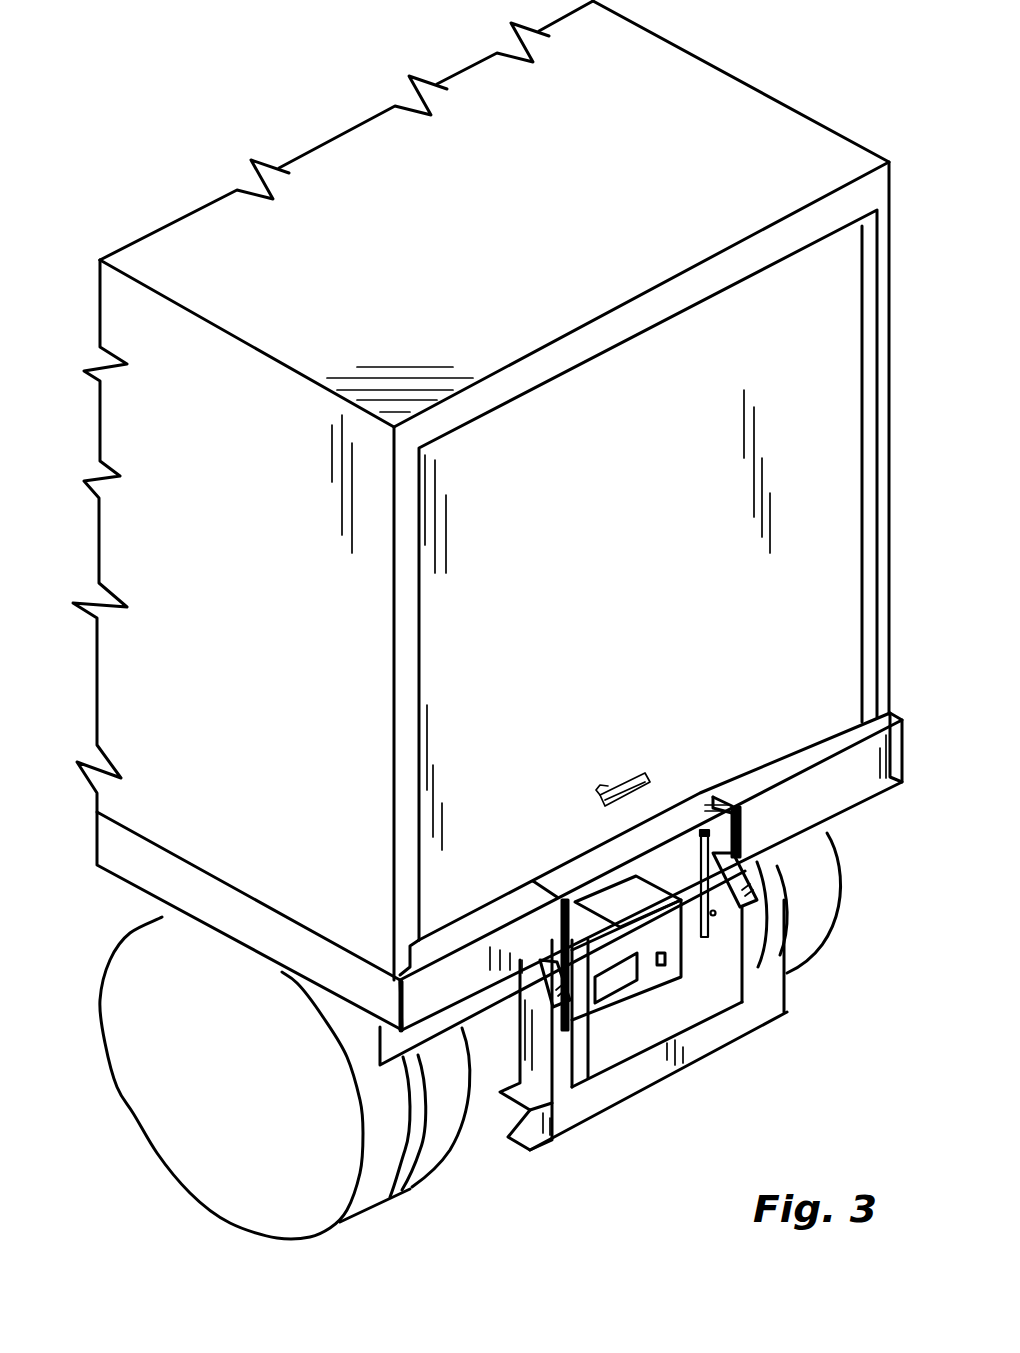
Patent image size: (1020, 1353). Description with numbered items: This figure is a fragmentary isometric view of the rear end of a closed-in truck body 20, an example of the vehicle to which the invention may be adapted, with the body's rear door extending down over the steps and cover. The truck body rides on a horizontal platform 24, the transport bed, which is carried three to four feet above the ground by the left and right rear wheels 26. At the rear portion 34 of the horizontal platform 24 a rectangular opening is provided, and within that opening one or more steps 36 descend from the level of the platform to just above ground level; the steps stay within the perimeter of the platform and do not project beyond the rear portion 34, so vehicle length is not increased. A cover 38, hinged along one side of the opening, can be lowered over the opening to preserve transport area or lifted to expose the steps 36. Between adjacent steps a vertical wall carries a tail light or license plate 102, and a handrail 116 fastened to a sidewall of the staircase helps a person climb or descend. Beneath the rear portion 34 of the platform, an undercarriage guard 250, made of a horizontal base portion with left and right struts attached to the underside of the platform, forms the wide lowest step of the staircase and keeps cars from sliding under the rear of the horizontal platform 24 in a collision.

The closed-in truck body 20 is at (212, 220).
The horizontal platform 24 is at (112, 848).
The rear wheels 26 is at (113, 1082).
The rear portion 34 is at (803, 760).
The steps 36 is at (607, 940).
The cover 38 is at (675, 817).
The tail light or license plate 102 is at (615, 980).
The handrail 116 is at (713, 917).
The undercarriage guard 250 is at (690, 1018).